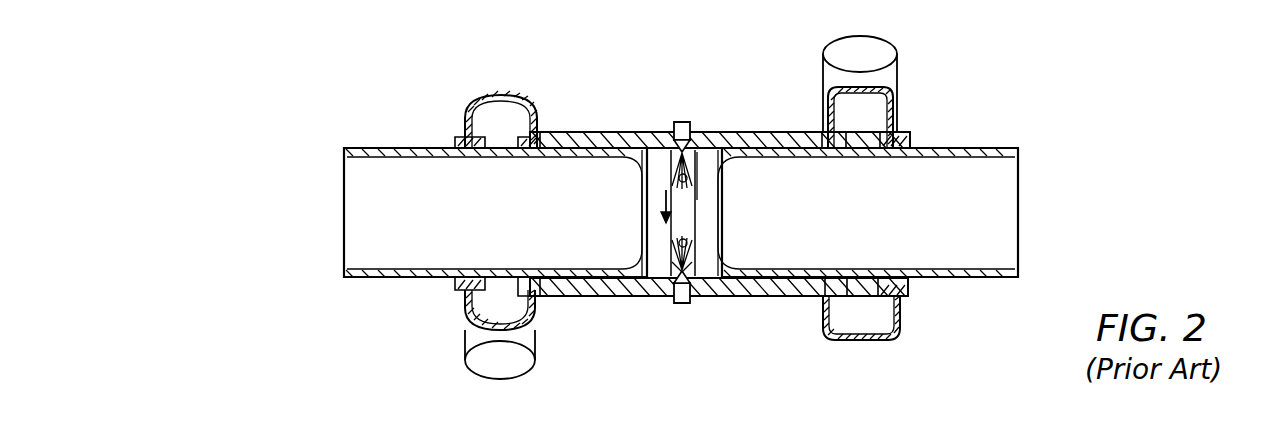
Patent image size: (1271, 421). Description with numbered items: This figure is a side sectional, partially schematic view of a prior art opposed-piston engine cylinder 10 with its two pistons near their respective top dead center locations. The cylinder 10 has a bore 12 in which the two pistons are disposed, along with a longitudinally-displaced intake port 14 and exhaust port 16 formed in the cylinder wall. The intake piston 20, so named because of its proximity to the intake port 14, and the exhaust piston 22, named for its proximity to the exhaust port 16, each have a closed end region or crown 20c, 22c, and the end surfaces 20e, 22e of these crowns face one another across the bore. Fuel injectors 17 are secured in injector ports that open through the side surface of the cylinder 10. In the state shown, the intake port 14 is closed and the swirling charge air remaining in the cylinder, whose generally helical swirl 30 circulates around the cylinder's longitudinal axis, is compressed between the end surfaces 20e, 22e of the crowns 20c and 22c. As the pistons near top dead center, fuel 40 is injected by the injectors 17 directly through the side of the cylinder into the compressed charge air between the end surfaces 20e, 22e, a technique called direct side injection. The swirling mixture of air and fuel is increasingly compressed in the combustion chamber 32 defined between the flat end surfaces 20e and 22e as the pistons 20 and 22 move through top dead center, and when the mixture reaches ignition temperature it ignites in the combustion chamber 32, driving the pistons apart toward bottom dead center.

The cylinder 10 is at (744, 132).
The bore 12 is at (690, 170).
The intake port 14 is at (503, 147).
The exhaust port 16 is at (862, 147).
The fuel injector 17 is at (682, 122).
The intake piston 20 is at (373, 278).
The crown of intake piston 20c is at (588, 153).
The end surface of intake piston crown 20e is at (650, 180).
The exhaust piston 22 is at (960, 278).
The crown of exhaust piston 22c is at (753, 278).
The end surface of exhaust piston crown 22e is at (712, 235).
The swirl 30 is at (668, 262).
The combustion chamber 32 is at (708, 165).
The fuel 40 is at (672, 244).